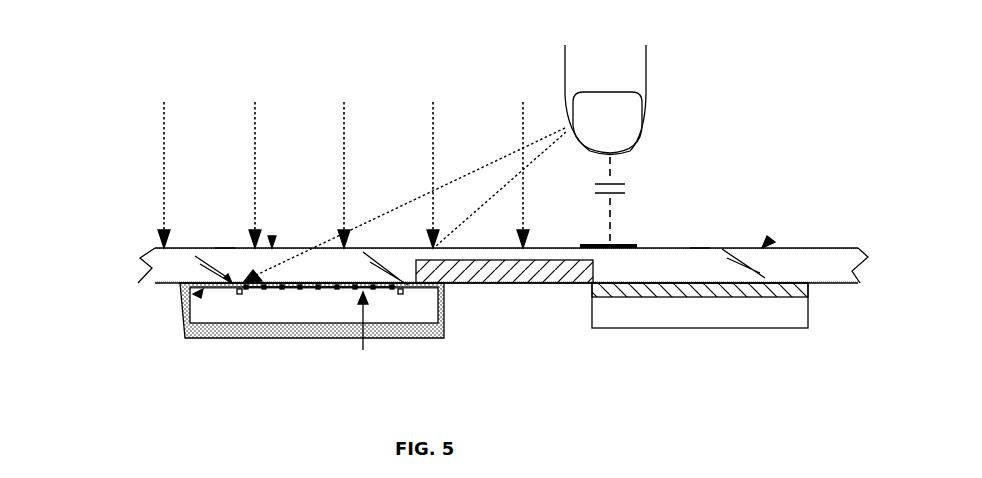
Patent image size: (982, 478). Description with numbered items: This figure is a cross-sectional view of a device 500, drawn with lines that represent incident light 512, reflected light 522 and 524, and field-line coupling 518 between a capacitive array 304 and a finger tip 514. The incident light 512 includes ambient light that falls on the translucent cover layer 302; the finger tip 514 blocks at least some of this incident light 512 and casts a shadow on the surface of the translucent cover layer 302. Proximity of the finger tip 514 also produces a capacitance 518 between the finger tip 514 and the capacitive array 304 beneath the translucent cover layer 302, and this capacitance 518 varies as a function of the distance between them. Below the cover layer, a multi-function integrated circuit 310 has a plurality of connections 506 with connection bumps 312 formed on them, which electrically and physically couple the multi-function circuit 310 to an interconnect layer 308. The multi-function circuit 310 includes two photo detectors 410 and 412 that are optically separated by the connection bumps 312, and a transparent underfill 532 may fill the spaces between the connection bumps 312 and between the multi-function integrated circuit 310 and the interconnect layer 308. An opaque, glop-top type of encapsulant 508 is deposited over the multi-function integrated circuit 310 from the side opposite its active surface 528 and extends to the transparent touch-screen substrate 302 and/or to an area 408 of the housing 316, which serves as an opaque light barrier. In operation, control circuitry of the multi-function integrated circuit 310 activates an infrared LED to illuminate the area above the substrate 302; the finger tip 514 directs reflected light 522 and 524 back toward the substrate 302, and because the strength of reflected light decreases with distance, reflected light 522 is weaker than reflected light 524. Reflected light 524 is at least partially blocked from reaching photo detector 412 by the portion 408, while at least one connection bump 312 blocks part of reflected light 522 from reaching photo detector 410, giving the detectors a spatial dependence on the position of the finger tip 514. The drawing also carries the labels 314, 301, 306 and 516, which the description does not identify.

The device 500 is at (177, 48).
The incident light 512 is at (128, 145).
The interconnect layer 308 is at (225, 247).
The outer surface of cover layer 314 is at (272, 247).
The housing 316 is at (150, 247).
The translucent cover layer 302 is at (697, 247).
The top surface 301 is at (768, 240).
The connection bumps 312 is at (285, 283).
The area of housing 408 is at (420, 256).
The display 306 is at (686, 328).
The capacitive array 304 is at (787, 296).
The encapsulant 508 is at (282, 337).
The photo detector 410 is at (238, 293).
The photo detector 412 is at (405, 292).
The connections 506 is at (352, 290).
The multi-function integrated circuit 310 is at (420, 327).
The active surface 528 is at (363, 350).
The transparent underfill 532 is at (188, 295).
The finger tip 514 is at (645, 93).
The capacitance 518 is at (625, 183).
The touch electrode 516 is at (625, 245).
The reflected light 522 is at (448, 183).
The reflected light 524 is at (503, 185).